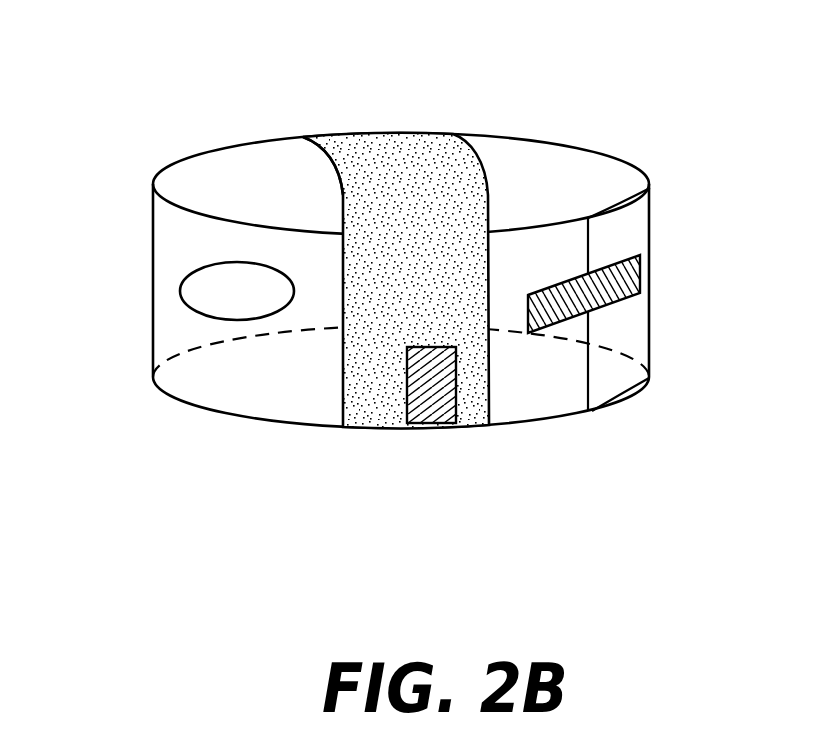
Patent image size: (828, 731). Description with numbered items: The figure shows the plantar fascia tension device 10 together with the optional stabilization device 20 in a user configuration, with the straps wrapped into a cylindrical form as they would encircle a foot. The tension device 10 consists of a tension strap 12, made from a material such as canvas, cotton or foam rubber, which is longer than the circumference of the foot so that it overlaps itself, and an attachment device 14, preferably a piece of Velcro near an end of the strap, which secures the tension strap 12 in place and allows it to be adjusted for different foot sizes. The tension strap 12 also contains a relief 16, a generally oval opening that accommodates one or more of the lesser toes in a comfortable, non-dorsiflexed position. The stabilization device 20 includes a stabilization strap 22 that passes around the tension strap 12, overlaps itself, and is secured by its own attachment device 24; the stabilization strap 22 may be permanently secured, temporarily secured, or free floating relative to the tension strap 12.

The tension device 10 is at (396, 263).
The tension strap 12 is at (618, 157).
The attachment device 14 is at (640, 278).
The relief 16 is at (192, 272).
The stabilization device 20 is at (382, 277).
The stabilization strap 22 is at (347, 133).
The attachment device 24 is at (440, 424).